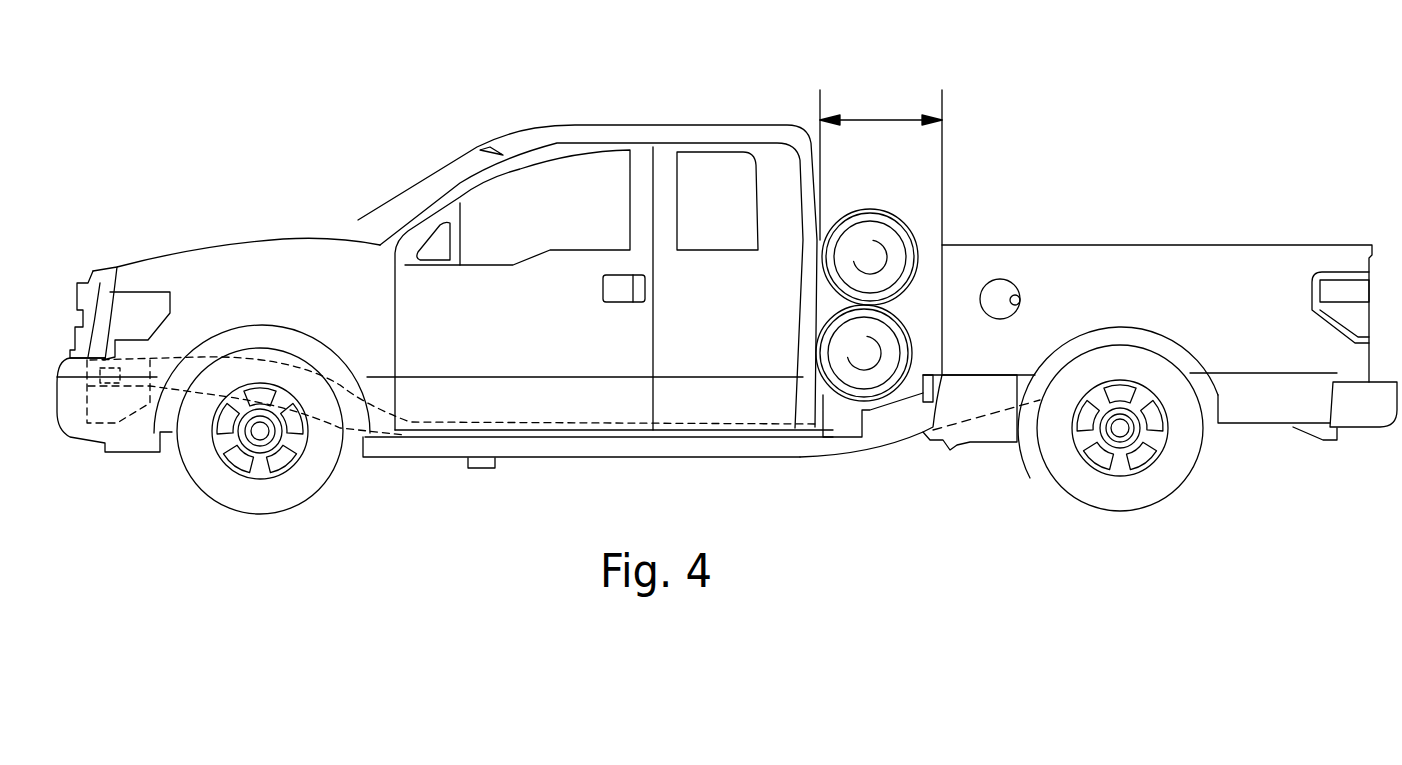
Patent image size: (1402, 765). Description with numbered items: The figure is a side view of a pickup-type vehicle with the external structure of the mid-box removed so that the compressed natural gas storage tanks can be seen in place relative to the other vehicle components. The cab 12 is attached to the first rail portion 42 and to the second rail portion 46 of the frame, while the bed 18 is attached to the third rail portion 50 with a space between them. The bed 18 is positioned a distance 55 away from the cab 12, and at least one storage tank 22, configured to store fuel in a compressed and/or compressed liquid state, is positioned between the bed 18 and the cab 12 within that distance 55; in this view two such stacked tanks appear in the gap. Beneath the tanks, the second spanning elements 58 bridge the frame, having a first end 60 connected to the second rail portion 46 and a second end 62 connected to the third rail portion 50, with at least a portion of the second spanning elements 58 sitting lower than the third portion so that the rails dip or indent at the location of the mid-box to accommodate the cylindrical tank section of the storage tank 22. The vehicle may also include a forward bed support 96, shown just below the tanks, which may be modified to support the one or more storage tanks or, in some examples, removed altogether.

The cab 12 is at (660, 125).
The bed 18 is at (1165, 245).
The storage tank 22 is at (897, 213).
The first rail portion 42 is at (157, 452).
The second rail portion 46 is at (627, 460).
The third rail portion 50 is at (1212, 392).
The distance 55 is at (890, 118).
The second spanning elements 58 is at (884, 430).
The first end 60 is at (838, 450).
The second end 62 is at (1020, 385).
The forward bed support 96 is at (822, 425).